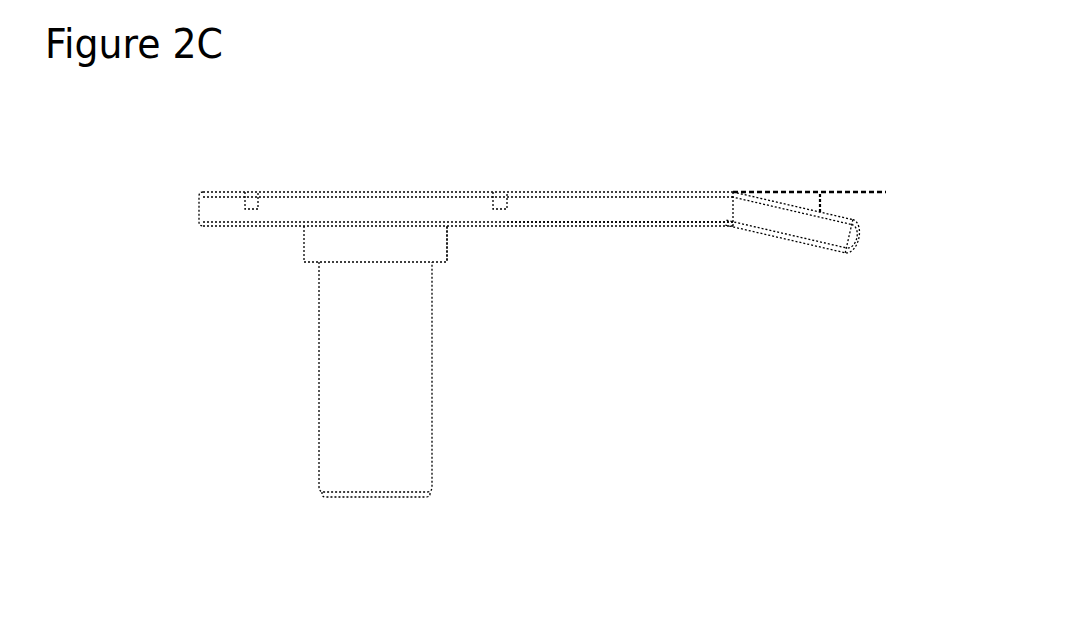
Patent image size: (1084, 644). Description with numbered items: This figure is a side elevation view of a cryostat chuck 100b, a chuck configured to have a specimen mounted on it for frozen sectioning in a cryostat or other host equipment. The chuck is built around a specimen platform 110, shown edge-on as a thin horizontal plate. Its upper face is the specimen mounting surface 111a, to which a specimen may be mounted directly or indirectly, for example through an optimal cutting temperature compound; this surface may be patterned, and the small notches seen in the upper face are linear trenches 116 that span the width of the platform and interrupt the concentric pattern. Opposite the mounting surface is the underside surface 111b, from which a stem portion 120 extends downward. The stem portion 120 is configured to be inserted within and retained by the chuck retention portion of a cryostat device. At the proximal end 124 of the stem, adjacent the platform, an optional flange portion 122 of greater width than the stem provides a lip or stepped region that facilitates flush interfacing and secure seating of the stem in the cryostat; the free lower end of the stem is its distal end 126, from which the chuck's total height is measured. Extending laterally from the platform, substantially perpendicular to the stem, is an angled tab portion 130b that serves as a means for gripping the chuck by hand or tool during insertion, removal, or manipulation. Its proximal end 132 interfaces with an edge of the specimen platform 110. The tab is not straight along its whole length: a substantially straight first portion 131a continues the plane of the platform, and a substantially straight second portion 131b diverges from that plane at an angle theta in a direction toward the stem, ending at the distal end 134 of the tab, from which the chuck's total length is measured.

The cryostat chuck 100b is at (858, 105).
The specimen platform 110 is at (371, 208).
The specimen mounting surface 111a is at (275, 180).
The underside surface 111b is at (279, 240).
The linear trenches 116 is at (242, 201).
The stem portion 120 is at (350, 387).
The flange portion 122 is at (336, 252).
The proximal end of stem portion 124 is at (446, 226).
The distal end of stem portion 126 is at (395, 497).
The angled tab portion 130b is at (836, 292).
The first portion 131a is at (658, 210).
The second portion 131b is at (803, 226).
The proximal end of angled tab portion 132 is at (544, 197).
The distal end of tab portion 134 is at (862, 243).